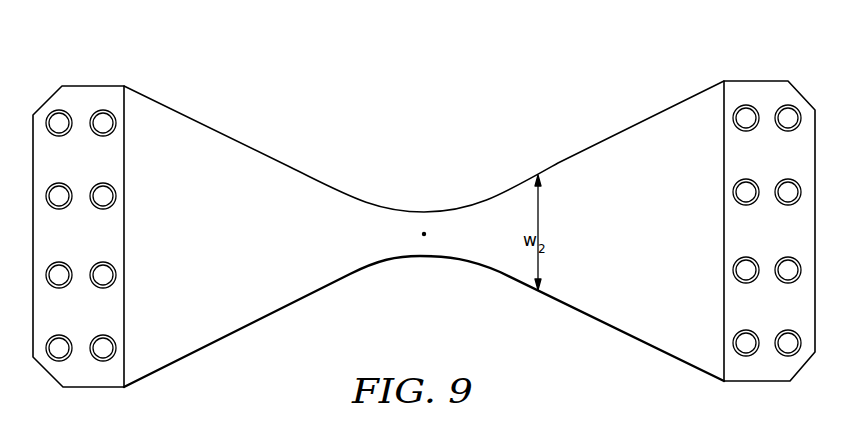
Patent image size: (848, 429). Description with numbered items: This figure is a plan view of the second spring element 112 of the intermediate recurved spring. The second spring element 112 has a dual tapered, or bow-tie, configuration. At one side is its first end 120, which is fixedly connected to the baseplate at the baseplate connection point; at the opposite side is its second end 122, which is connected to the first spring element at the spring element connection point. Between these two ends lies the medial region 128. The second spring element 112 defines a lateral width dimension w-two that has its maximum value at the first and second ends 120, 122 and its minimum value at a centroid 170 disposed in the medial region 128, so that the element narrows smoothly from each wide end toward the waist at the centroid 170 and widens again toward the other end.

The second spring element 112 is at (190, 115).
The first end 120 is at (765, 90).
The second end 122 is at (83, 103).
The medial region 128 is at (325, 215).
The centroid 170 is at (424, 236).